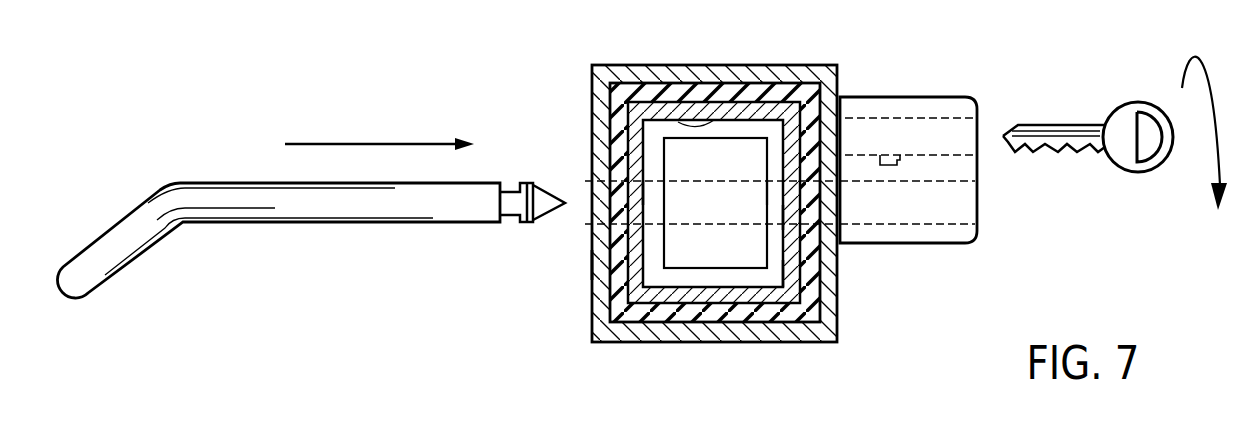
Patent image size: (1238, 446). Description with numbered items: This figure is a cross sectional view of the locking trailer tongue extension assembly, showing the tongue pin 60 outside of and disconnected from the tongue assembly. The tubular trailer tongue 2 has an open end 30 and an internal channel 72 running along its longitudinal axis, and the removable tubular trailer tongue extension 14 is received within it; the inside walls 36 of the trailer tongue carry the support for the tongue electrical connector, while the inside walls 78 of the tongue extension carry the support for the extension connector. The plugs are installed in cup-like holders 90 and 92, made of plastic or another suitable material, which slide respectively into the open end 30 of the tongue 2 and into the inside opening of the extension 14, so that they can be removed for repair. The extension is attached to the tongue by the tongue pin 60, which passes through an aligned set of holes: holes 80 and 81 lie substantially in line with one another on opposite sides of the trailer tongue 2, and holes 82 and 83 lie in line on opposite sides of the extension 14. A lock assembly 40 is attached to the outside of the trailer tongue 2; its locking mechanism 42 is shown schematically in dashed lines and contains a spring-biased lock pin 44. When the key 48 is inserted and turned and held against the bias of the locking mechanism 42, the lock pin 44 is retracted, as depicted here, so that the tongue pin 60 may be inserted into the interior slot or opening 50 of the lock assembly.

The tubular trailer tongue 2 is at (620, 65).
The removable tubular trailer tongue extension 14 is at (718, 288).
The open end 30 is at (645, 325).
The inside walls 36 is at (680, 317).
The lock assembly 40 is at (880, 95).
The locking mechanism 42 is at (927, 132).
The lock pin 44 is at (892, 165).
The key 48 is at (1127, 107).
The interior slot or opening 50 is at (840, 205).
The tongue pin 60 is at (328, 225).
The internal channel 72 is at (727, 228).
The inside walls 78 is at (714, 120).
The hole 80 is at (590, 183).
The hole 81 is at (787, 217).
The hole 82 is at (647, 192).
The hole 83 is at (773, 192).
The cup-like holder 90 is at (592, 262).
The cup-like holder 92 is at (752, 280).